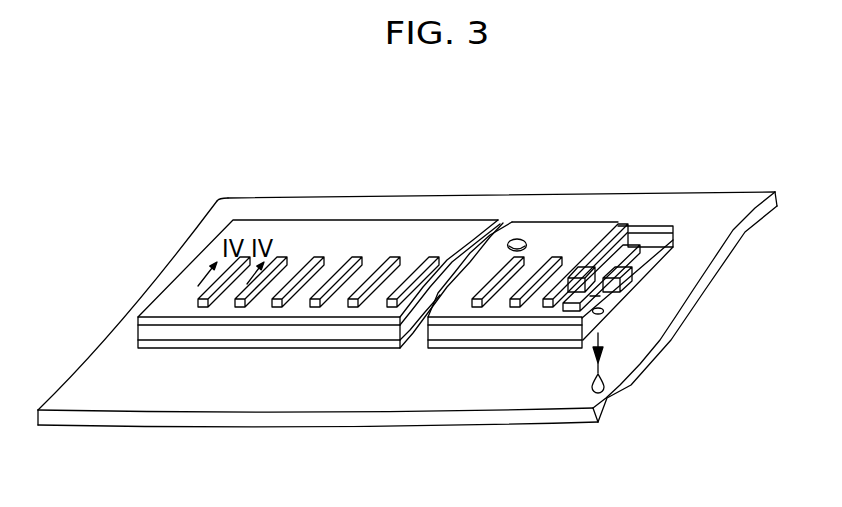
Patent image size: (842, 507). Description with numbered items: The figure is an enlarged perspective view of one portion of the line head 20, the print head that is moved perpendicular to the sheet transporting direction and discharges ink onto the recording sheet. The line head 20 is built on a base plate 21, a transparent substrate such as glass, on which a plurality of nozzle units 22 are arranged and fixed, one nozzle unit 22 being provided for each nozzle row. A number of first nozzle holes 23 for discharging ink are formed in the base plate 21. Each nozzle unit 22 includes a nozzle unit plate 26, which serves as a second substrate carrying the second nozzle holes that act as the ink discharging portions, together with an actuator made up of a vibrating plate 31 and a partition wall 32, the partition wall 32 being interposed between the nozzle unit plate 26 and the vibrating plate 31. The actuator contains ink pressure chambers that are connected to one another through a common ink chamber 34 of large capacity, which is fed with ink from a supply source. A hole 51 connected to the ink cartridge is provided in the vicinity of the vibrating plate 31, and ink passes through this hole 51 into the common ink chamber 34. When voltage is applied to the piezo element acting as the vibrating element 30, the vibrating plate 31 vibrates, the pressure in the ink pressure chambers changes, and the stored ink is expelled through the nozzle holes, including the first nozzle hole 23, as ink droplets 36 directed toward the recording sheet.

The line head 20 is at (660, 142).
The base plate 21 is at (705, 205).
The nozzle unit 22 is at (193, 254).
The first nozzle hole 23 is at (590, 296).
The nozzle unit plate 26 is at (645, 282).
The vibrating element 30 is at (316, 258).
The vibrating plate 31 is at (443, 236).
The partition wall 32 is at (603, 308).
The common ink chamber 34 is at (642, 258).
The ink droplet 36 is at (606, 381).
The hole 51 is at (514, 239).